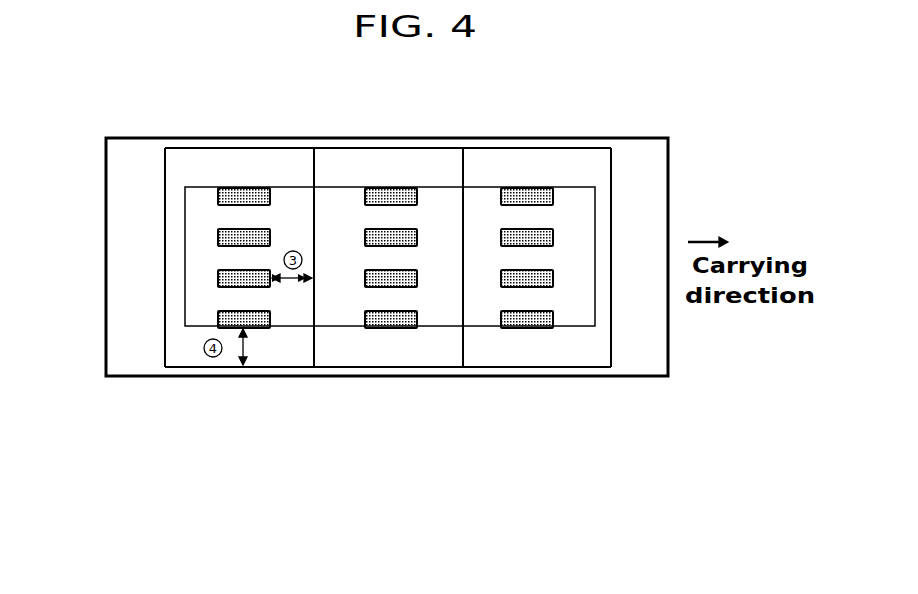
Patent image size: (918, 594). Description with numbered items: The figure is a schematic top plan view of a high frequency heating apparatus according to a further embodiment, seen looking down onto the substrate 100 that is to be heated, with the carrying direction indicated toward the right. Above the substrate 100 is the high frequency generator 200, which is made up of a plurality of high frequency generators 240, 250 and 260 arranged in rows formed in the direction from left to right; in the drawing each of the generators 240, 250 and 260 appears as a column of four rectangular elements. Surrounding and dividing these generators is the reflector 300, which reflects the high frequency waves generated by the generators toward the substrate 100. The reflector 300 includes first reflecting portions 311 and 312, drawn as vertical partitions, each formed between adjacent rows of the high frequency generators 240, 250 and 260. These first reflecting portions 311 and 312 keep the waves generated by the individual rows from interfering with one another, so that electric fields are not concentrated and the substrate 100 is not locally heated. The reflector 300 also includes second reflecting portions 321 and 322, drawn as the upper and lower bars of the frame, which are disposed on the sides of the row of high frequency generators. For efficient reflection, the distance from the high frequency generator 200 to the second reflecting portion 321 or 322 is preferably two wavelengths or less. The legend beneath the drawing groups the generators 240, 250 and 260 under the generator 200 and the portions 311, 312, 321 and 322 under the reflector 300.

The substrate 100 is at (185, 256).
The high frequency generator 200 is at (334, 314).
The high frequency generator 240 is at (242, 188).
The high frequency generator 250 is at (410, 188).
The high frequency generator 260 is at (527, 188).
The reflector 300 is at (388, 328).
The first reflecting portion 311 is at (314, 350).
The first reflecting portion 312 is at (463, 348).
The second reflecting portion 321 is at (372, 145).
The second reflecting portion 322 is at (365, 368).